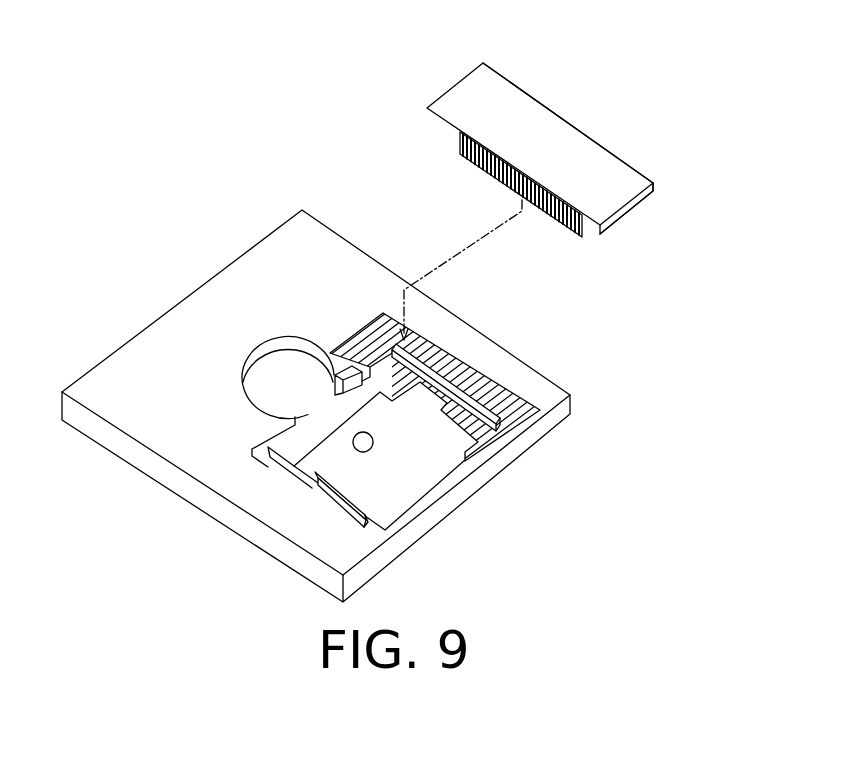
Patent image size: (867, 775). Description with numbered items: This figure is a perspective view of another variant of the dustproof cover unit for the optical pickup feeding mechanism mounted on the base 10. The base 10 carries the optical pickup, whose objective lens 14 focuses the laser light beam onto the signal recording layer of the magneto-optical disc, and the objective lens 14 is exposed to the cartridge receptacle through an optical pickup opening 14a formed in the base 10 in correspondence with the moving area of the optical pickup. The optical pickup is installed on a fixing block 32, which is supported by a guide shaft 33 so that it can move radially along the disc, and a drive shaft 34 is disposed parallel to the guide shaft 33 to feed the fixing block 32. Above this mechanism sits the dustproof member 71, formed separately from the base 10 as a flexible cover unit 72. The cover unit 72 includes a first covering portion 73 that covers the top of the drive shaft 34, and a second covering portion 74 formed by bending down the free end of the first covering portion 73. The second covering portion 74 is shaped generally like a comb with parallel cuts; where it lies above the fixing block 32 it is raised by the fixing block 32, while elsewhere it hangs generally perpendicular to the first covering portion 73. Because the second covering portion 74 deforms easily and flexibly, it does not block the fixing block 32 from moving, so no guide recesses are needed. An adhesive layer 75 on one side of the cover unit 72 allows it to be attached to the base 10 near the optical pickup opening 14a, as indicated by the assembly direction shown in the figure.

The base 10 is at (223, 270).
The objective lens 14 is at (357, 438).
The optical pickup opening 14a is at (280, 433).
The fixing block 32 is at (388, 463).
The guide shaft 33 is at (333, 513).
The drive shaft 34 is at (498, 407).
The dustproof member 71 is at (363, 158).
The flexible cover unit 72 is at (533, 112).
The first covering portion 73 is at (618, 187).
The second covering portion 74 is at (572, 236).
The adhesive layer 75 is at (633, 213).